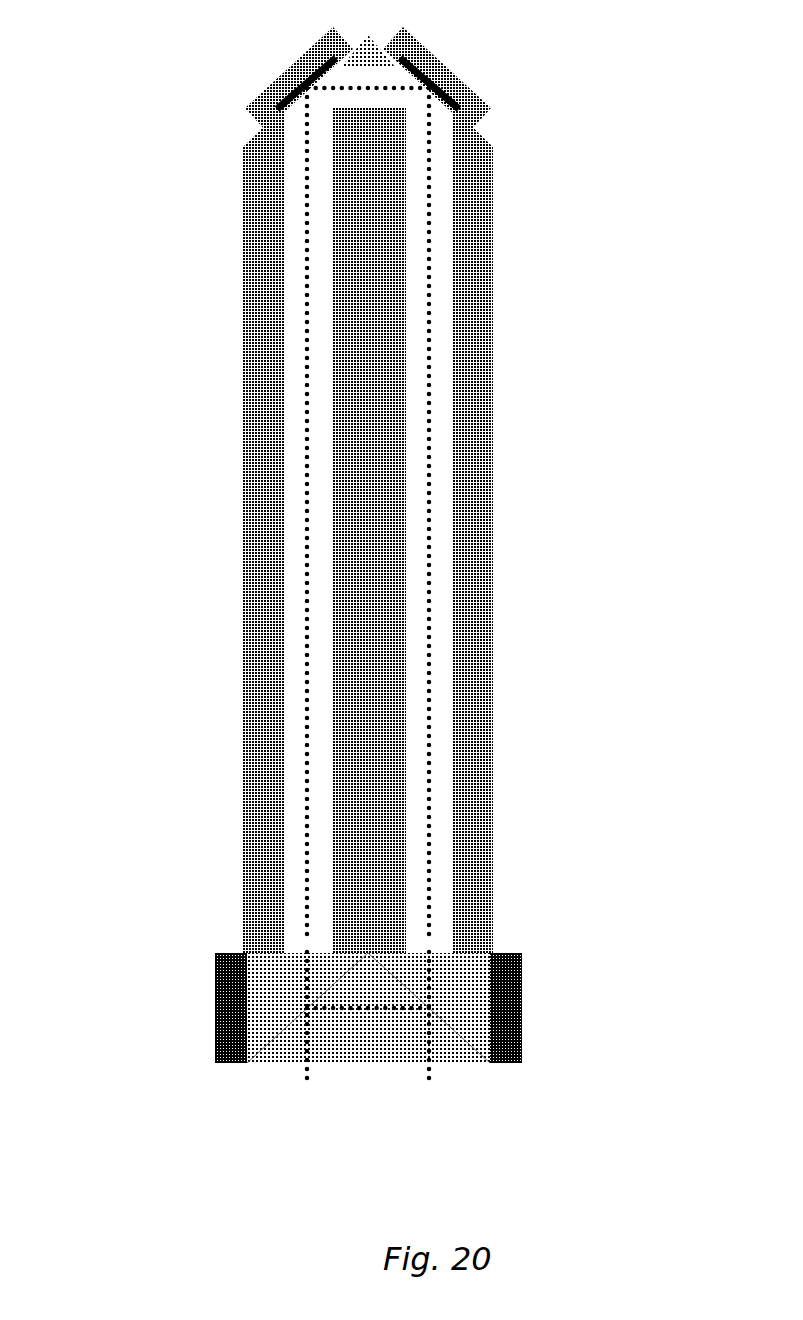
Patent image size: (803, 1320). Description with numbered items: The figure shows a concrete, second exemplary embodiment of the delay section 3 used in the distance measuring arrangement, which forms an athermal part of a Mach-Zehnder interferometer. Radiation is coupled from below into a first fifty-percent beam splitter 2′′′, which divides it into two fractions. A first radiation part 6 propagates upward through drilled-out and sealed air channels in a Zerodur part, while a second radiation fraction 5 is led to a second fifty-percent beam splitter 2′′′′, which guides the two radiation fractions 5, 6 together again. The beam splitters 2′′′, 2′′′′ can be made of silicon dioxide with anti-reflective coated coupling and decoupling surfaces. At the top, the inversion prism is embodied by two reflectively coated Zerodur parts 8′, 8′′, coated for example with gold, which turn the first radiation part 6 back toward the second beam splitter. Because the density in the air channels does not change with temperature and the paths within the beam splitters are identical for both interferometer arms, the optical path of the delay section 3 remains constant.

The delay section 3 is at (536, 158).
The first radiation part 6 is at (305, 235).
The reflectively coated Zerodur part 8′ is at (295, 65).
The reflectively coated Zerodur part 8′′ is at (442, 70).
The first 50% beam splitter 2′′′ is at (300, 1010).
The second 50% beam splitter 2′′′′ is at (437, 1012).
The second radiation fraction 5 is at (378, 1006).